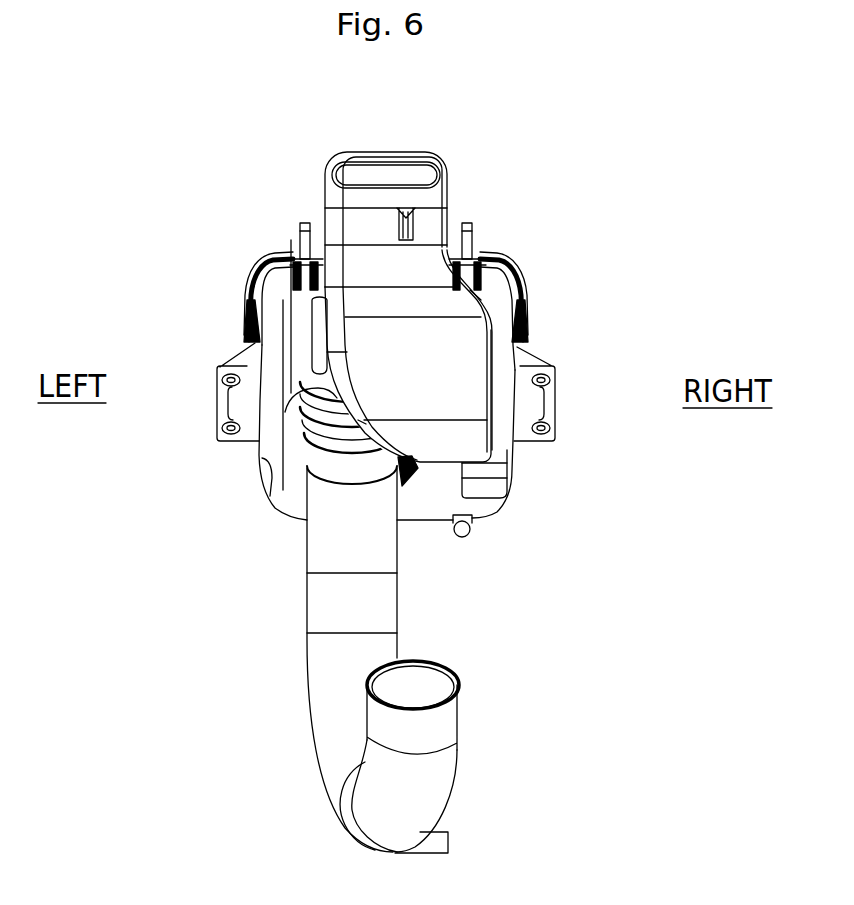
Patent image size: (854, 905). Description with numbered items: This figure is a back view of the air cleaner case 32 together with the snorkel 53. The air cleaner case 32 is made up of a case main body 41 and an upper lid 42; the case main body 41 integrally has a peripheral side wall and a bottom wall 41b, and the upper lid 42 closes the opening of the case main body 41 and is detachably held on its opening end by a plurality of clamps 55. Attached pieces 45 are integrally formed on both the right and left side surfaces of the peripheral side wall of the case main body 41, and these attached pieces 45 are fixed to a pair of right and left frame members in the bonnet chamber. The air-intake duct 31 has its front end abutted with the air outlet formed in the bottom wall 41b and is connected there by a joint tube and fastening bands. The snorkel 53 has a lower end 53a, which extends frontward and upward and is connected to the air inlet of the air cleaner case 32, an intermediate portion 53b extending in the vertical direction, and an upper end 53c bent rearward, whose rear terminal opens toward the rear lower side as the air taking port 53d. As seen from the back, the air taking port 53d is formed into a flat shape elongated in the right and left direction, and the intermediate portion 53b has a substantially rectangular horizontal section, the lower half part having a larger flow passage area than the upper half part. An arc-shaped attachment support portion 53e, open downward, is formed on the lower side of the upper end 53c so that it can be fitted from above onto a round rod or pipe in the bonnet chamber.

The air-intake duct 31 is at (323, 670).
The air cleaner case 32 is at (242, 478).
The case main body 41 is at (273, 335).
The bottom wall 41b is at (422, 503).
The upper lid 42 is at (278, 292).
The attached pieces 45 is at (240, 402).
The snorkel 53 is at (307, 200).
The lower end 53a is at (510, 482).
The intermediate portion 53b is at (463, 345).
The upper end 53c is at (415, 152).
The air taking port 53d is at (391, 172).
The attachment support portion 53e is at (413, 212).
The clamps 55 is at (303, 252).